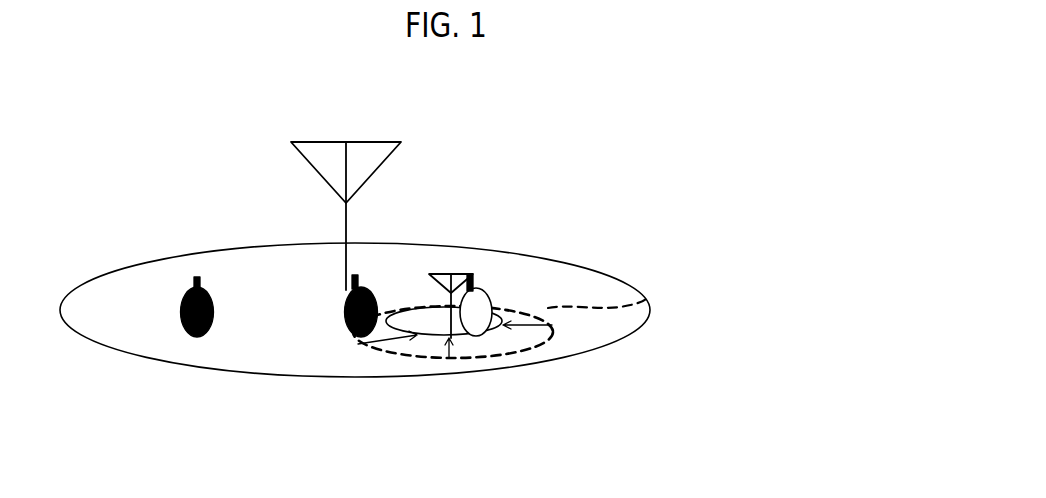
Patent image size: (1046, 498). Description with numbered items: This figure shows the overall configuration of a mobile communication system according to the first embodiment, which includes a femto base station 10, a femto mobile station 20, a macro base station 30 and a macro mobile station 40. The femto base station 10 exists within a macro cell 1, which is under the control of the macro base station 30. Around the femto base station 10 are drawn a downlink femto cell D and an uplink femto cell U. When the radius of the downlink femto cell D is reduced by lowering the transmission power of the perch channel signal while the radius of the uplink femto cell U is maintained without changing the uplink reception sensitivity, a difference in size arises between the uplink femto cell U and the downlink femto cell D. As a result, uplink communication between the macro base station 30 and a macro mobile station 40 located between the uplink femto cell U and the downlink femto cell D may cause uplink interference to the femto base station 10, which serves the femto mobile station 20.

The macro cell 1 is at (366, 376).
The femto base station 10 is at (452, 274).
The femto mobile station 20 is at (486, 320).
The macro base station 30 is at (329, 142).
The macro mobile station 40 is at (350, 338).
The downlink femto cell D is at (503, 310).
The uplink femto cell U is at (646, 299).